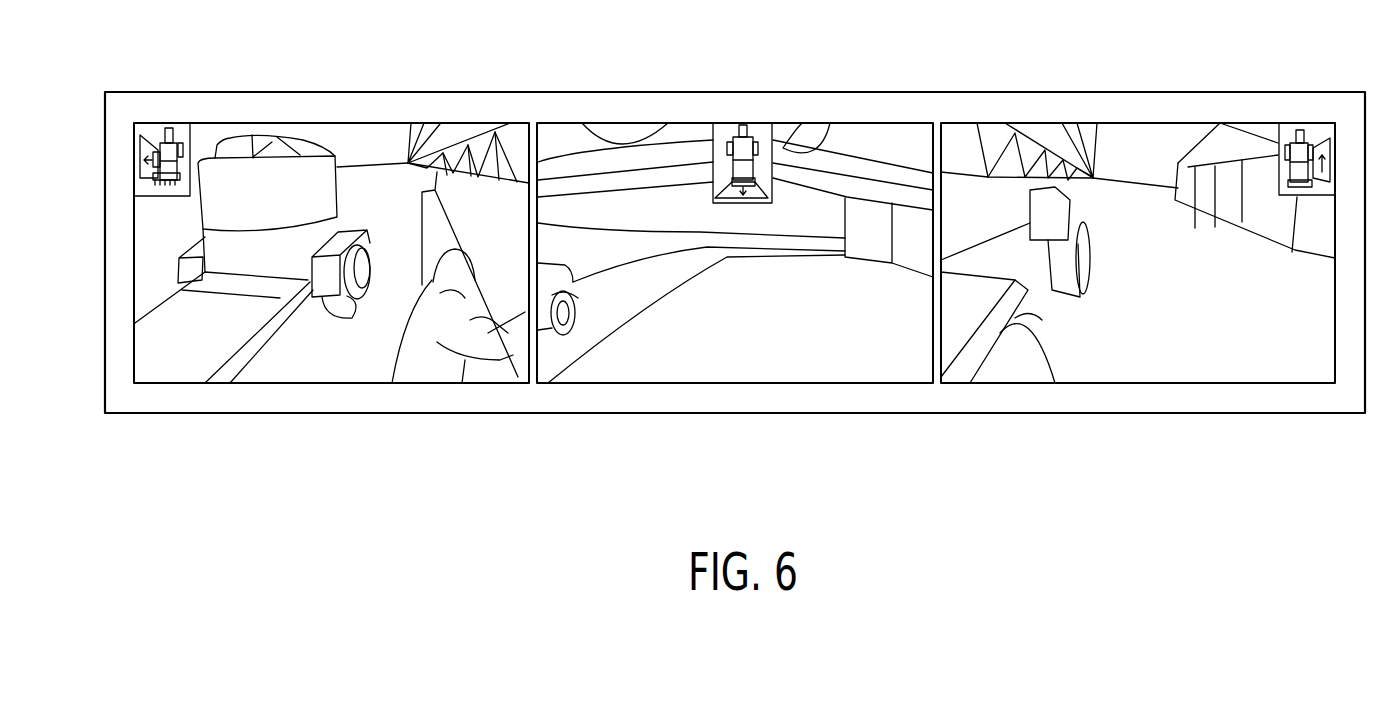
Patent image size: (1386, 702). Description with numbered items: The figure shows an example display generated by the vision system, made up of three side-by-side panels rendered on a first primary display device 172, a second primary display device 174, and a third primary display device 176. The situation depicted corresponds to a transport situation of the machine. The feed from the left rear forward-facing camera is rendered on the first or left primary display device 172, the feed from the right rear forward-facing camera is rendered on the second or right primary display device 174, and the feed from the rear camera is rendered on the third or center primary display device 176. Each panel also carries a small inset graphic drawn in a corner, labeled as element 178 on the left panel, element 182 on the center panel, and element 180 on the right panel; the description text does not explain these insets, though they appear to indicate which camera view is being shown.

The first primary display device 172 is at (350, 383).
The second primary display device 174 is at (1035, 383).
The third primary display device 176 is at (752, 383).
The left vehicle indicator icon 178 is at (153, 128).
The right vehicle indicator icon 180 is at (1313, 128).
The center vehicle indicator icon 182 is at (760, 128).